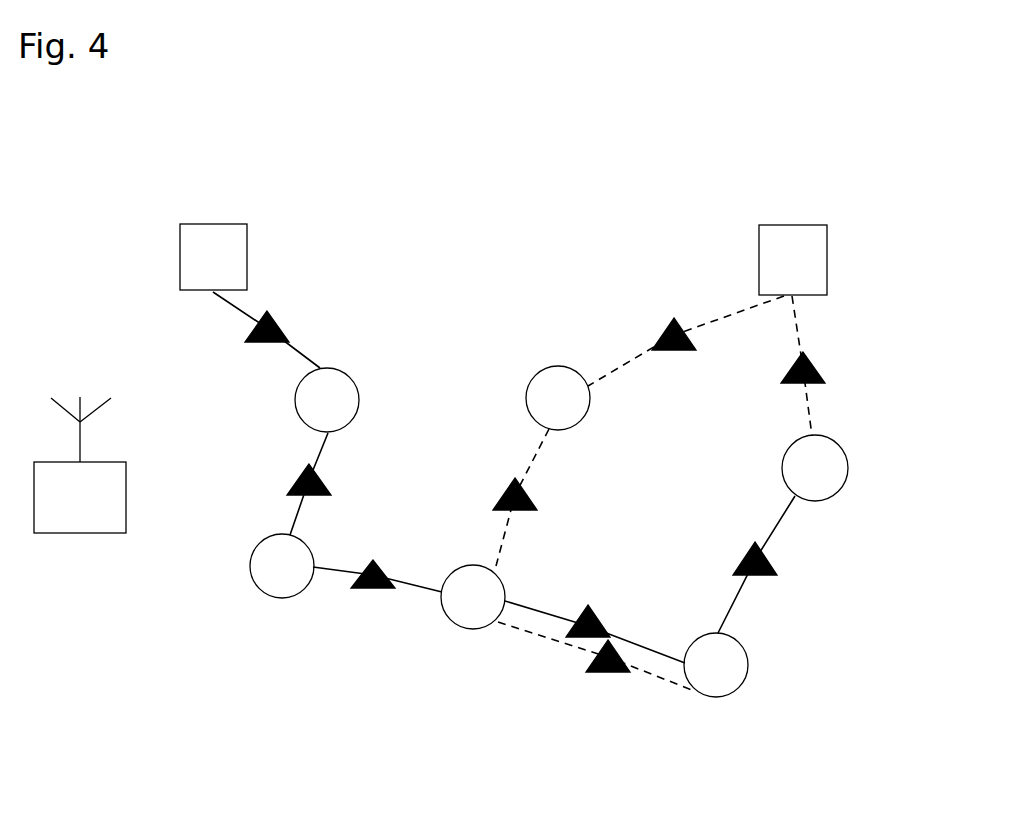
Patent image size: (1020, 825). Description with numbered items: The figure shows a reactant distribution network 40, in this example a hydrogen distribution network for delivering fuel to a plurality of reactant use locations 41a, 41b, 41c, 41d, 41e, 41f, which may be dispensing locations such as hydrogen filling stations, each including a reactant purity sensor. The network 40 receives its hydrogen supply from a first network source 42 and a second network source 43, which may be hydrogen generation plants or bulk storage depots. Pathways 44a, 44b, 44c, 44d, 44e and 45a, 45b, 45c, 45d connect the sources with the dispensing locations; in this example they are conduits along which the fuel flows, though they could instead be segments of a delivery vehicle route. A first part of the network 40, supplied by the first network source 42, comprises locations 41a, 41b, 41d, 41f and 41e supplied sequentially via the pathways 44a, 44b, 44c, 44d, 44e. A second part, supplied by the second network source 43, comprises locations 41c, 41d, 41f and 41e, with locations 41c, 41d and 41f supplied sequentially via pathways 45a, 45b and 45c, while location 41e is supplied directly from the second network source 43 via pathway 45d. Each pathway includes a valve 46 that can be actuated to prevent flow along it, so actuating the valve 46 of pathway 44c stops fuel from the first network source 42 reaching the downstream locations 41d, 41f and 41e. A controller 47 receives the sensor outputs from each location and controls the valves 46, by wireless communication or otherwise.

The reactant distribution network 40 is at (460, 270).
The reactant use location 41a is at (329, 398).
The reactant use location 41b is at (292, 559).
The reactant use location 41c is at (555, 390).
The reactant use location 41d is at (478, 597).
The reactant use location 41e is at (832, 468).
The reactant use location 41f is at (732, 663).
The first network source 42 is at (200, 271).
The second network source 43 is at (804, 275).
The pathway 44a is at (230, 305).
The pathway 44b is at (320, 444).
The pathway 44c is at (333, 575).
The pathway 44d is at (533, 607).
The pathway 44e is at (733, 598).
The pathway 45a is at (728, 317).
The pathway 45b is at (527, 455).
The pathway 45c is at (530, 632).
The pathway 45d is at (808, 403).
The valve 46 is at (278, 317).
The controller 47 is at (80, 465).